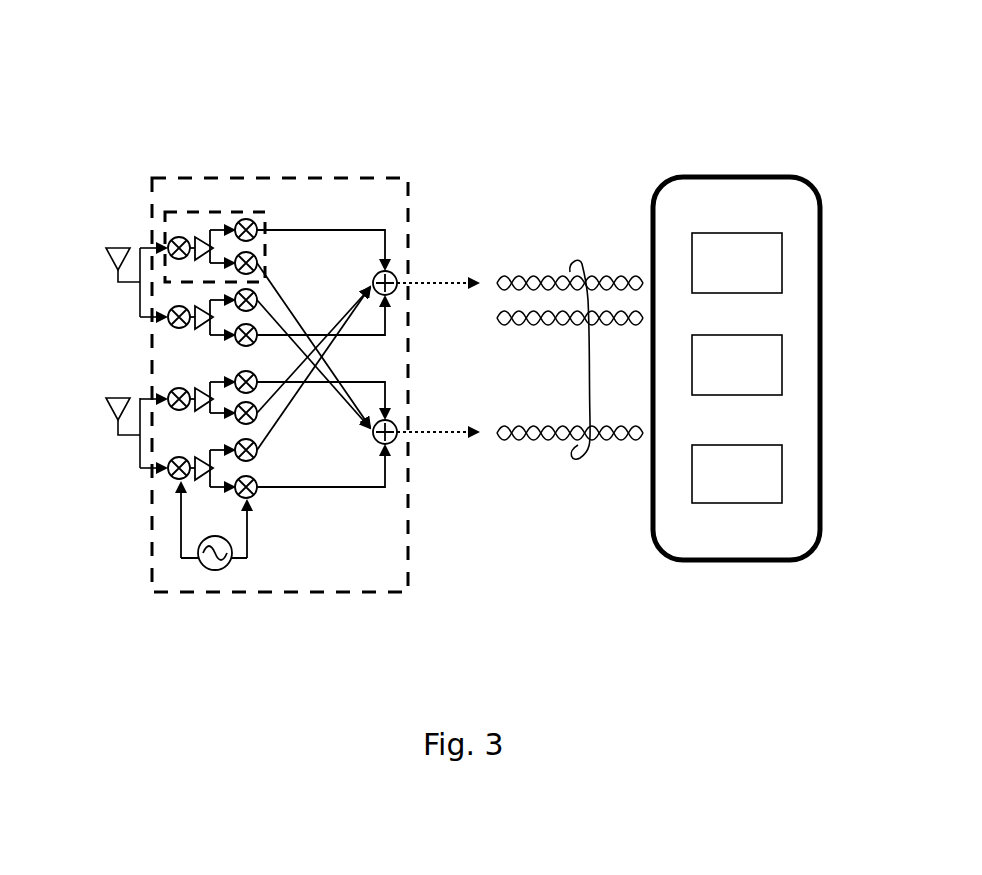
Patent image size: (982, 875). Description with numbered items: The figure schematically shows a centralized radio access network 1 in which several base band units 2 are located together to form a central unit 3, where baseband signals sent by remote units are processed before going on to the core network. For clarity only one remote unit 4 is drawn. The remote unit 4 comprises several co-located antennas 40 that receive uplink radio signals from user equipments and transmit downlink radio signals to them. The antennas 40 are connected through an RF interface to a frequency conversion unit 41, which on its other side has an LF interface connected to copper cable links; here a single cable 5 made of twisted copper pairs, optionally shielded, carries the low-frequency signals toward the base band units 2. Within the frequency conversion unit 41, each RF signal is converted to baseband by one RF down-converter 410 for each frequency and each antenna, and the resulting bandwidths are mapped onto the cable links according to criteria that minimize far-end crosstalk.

The radio access network 1 is at (546, 124).
The base band unit 2 is at (777, 246).
The central unit 3 is at (693, 177).
The remote unit 4 is at (223, 158).
The cable 5 is at (530, 475).
The antenna 40 is at (82, 240).
The frequency conversion unit 41 is at (295, 178).
The RF down-converter 410 is at (175, 210).